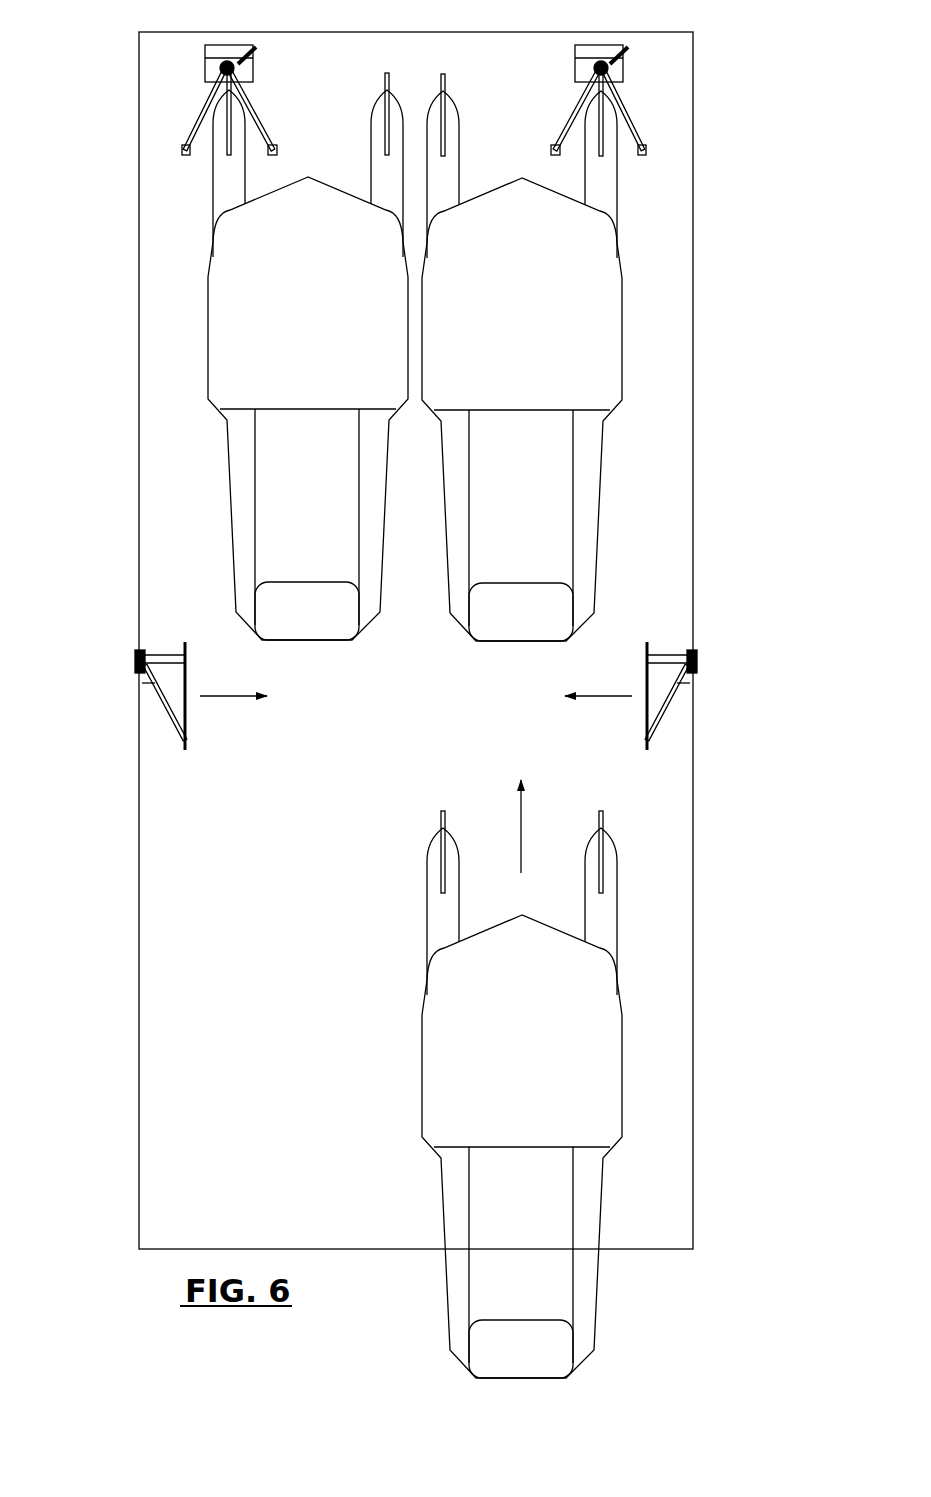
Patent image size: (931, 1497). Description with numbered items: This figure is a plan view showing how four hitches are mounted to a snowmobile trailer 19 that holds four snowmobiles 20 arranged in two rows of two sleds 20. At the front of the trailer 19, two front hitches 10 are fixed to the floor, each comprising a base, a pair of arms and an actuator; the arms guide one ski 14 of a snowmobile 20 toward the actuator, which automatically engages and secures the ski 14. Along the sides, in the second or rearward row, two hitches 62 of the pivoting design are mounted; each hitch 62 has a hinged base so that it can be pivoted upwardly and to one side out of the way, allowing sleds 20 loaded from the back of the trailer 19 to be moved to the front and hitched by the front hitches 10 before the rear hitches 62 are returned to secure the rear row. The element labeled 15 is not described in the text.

The snowmobile hitch 10 is at (223, 2).
The ski 14 is at (220, 200).
The ski skag / support shaft 15 is at (232, 138).
The trailer 19 is at (695, 583).
The snowmobile 20 is at (230, 487).
The snowmobile hitch 62 is at (128, 705).